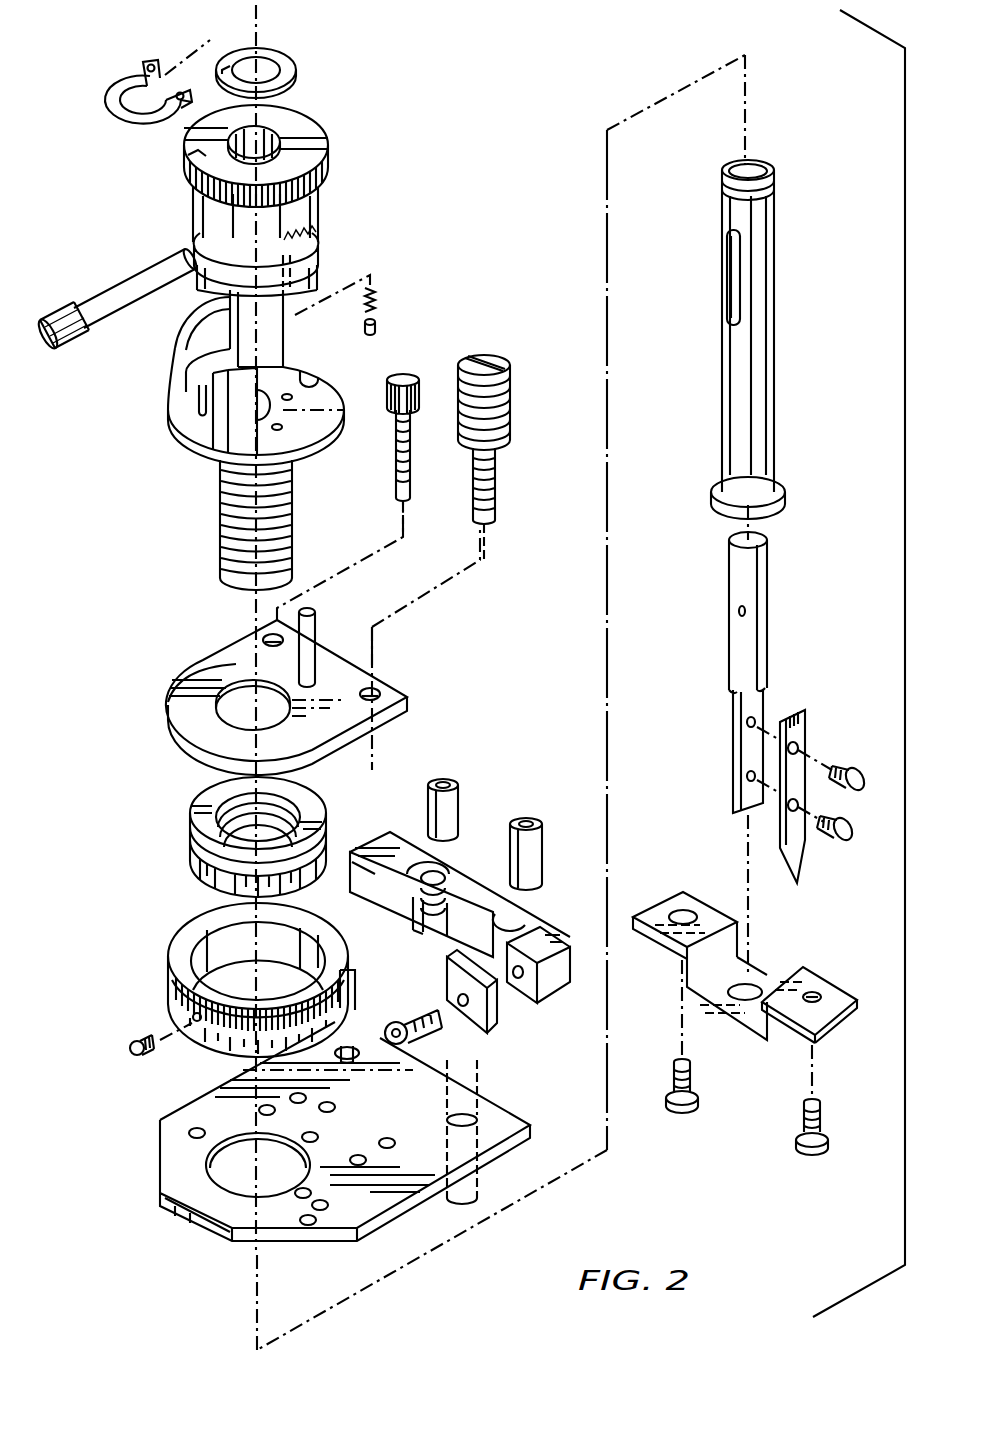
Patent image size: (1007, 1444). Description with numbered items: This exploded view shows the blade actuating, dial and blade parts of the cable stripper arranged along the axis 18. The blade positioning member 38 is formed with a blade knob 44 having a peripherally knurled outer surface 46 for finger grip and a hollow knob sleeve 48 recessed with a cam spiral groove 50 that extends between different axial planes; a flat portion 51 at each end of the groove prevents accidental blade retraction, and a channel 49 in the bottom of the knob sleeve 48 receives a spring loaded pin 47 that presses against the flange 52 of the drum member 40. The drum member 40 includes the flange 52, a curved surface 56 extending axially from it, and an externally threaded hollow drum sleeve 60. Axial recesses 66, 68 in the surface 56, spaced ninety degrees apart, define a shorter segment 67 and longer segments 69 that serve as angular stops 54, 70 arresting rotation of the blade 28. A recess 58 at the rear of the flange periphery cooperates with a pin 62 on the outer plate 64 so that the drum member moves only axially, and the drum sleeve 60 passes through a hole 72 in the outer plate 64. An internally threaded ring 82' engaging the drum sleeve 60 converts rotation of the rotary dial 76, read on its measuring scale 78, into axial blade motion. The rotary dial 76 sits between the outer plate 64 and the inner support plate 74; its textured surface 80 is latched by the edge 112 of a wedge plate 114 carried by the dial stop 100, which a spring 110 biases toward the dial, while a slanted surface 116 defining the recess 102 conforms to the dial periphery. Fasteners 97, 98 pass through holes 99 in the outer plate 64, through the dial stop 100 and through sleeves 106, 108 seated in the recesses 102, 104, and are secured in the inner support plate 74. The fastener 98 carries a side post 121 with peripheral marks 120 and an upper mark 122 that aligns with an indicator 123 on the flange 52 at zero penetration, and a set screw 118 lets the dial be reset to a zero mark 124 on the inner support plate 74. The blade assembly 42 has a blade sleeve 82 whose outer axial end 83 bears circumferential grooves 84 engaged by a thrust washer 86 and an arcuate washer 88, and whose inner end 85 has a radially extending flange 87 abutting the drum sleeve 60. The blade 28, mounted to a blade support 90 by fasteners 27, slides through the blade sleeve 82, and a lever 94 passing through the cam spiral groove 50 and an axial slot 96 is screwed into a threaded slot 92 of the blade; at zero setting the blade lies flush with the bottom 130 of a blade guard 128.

The axis 18 is at (268, 30).
The thrust washer 86 is at (300, 62).
The arcuate washer 88 is at (118, 100).
The blade knob 44 is at (338, 148).
The blade positioning member 38 is at (345, 166).
The peripherally knurled outer surface 46 is at (210, 157).
The knob sleeve 48 is at (320, 214).
The flat portion 51 is at (202, 240).
The cam spiral groove 50 is at (318, 240).
The channel 49 is at (318, 258).
The lever 94 is at (95, 305).
The spring loaded pin 47 is at (378, 326).
The angular stop 70 is at (215, 305).
The axial recess 66 is at (205, 343).
The segment 67 is at (200, 353).
The axial recess 68 is at (197, 392).
The recess 58 is at (312, 372).
The flange 52 is at (338, 392).
The angular stop 54 is at (185, 447).
The curved surface 56 is at (222, 440).
The segments 69 is at (243, 420).
The indicator 123 is at (310, 452).
The drum sleeve 60 is at (292, 508).
The drum member 40 is at (212, 523).
The fastener 97 is at (412, 463).
The fastener 98 is at (497, 480).
The peripheral marks 120 is at (510, 395).
The side post 121 is at (510, 440).
The upper mark 122 is at (505, 375).
The pin 62 is at (312, 640).
The holes 99 is at (380, 690).
The hole 72 is at (225, 665).
The outer plate 64 is at (170, 704).
The internally threaded ring 82' is at (229, 837).
The sleeve 106 is at (425, 820).
The slanted surface 116 is at (397, 878).
The recess 102 is at (430, 866).
The sleeve 108 is at (527, 860).
The recess 104 is at (514, 918).
The dial stop 100 is at (560, 922).
The spring 110 is at (418, 922).
The edge 112 is at (447, 985).
The wedge plate 114 is at (495, 1010).
The textured surface 80 is at (342, 987).
The rotary dial 76 is at (172, 985).
The set screw 118 is at (133, 1045).
The measuring scale 78 is at (228, 1048).
The inner support plate 74 is at (512, 1122).
The zero mark 124 is at (172, 1222).
The circumferential grooves 84 is at (773, 165).
The outer axial end 83 is at (775, 185).
The axial slot 96 is at (730, 275).
The blade sleeve 82 is at (776, 331).
The radially extending flange 87 is at (785, 478).
The inner end 85 is at (785, 498).
The blade assembly 42 is at (780, 530).
The threaded slot 92 is at (738, 613).
The blade support 90 is at (774, 614).
The fasteners 27 is at (854, 822).
The blade 28 is at (800, 860).
The blade guard 128 is at (832, 978).
The bottom 130 is at (710, 1022).